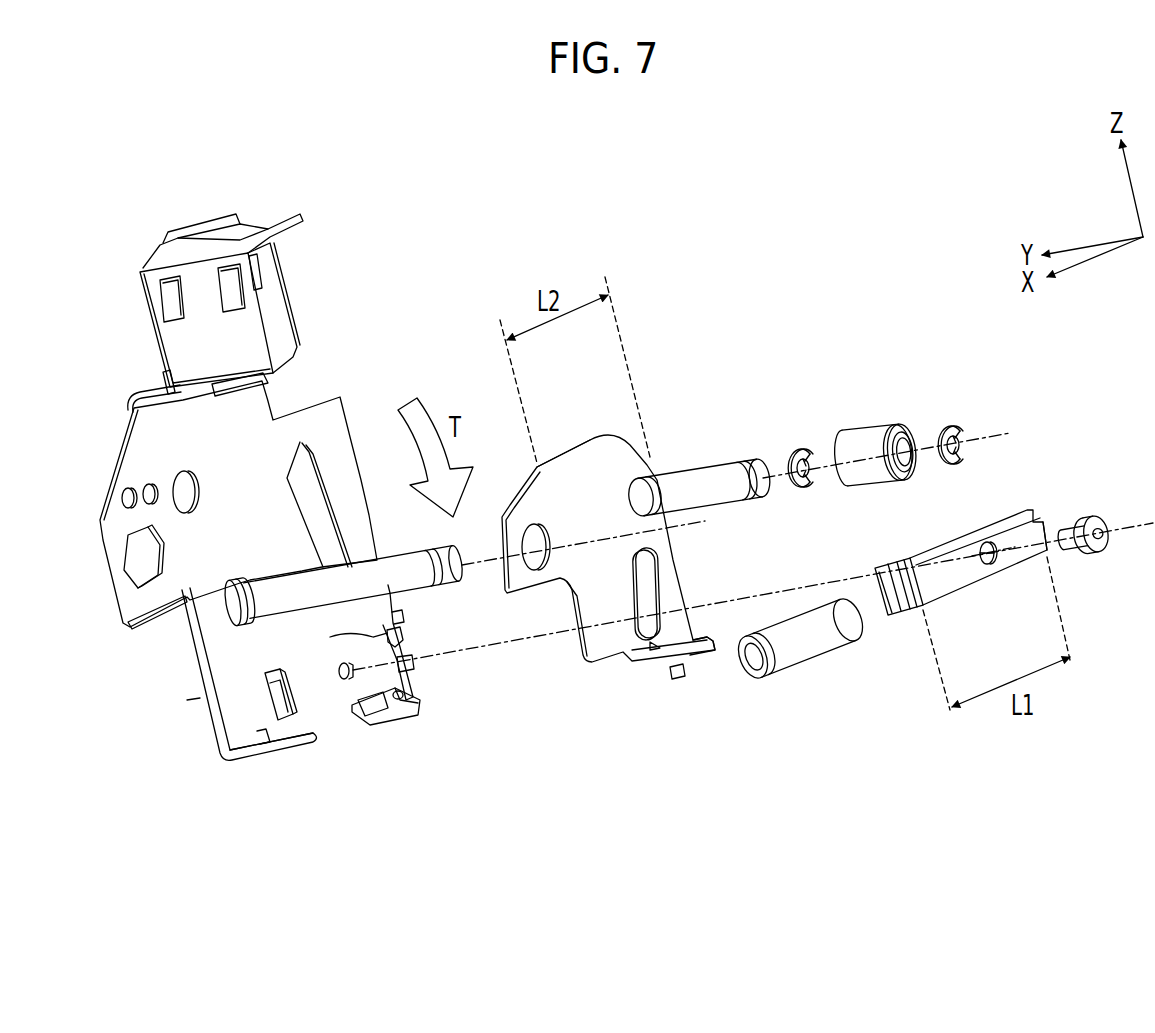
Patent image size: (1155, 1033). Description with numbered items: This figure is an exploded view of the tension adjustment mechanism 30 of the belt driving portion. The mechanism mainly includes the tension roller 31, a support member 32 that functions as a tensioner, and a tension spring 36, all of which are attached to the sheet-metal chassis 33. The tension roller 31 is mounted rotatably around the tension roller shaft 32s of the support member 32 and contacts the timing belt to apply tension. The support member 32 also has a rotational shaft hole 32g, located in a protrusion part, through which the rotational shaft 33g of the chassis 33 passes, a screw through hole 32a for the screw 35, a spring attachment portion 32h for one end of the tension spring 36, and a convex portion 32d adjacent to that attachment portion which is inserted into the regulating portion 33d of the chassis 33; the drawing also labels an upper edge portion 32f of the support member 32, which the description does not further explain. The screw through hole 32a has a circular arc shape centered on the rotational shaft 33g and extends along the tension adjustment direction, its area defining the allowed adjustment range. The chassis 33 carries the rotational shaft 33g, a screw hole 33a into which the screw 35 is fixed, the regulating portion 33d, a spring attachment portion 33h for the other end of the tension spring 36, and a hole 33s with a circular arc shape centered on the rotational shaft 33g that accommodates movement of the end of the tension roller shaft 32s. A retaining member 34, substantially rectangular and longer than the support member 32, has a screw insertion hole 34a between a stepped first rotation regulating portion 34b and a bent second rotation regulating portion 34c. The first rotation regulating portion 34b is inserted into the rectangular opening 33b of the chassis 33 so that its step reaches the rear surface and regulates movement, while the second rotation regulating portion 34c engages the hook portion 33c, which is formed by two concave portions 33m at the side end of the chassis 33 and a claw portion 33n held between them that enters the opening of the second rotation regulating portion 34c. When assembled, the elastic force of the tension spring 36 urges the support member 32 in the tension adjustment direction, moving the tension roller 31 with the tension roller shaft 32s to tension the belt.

The tension adjustment mechanism 30 is at (545, 257).
The tension roller 31 is at (853, 437).
The support member 32 is at (637, 552).
The screw through hole 32a is at (660, 590).
The convex portion 32d is at (667, 678).
The upper edge surface 32f is at (590, 437).
The rotational shaft hole 32g is at (537, 517).
The spring attachment portion 32h is at (700, 657).
The tension roller shaft 32s is at (722, 477).
The chassis 33 is at (291, 526).
The screw hole 33a is at (346, 682).
The opening 33b is at (263, 677).
The hook portion 33c is at (400, 665).
The regulating portion 33d is at (393, 723).
The rotational shaft 33g is at (224, 596).
The spring attachment portion 33h is at (262, 760).
The concave portions 33m is at (385, 640).
The claw portion 33n is at (405, 620).
The hole 33s is at (302, 467).
The retaining member 34 is at (961, 573).
The screw insertion hole 34a is at (997, 537).
The first rotation regulating portion 34b is at (908, 557).
The second rotation regulating portion 34c is at (1047, 557).
The screw 35 is at (1100, 513).
The tension spring 36 is at (808, 660).